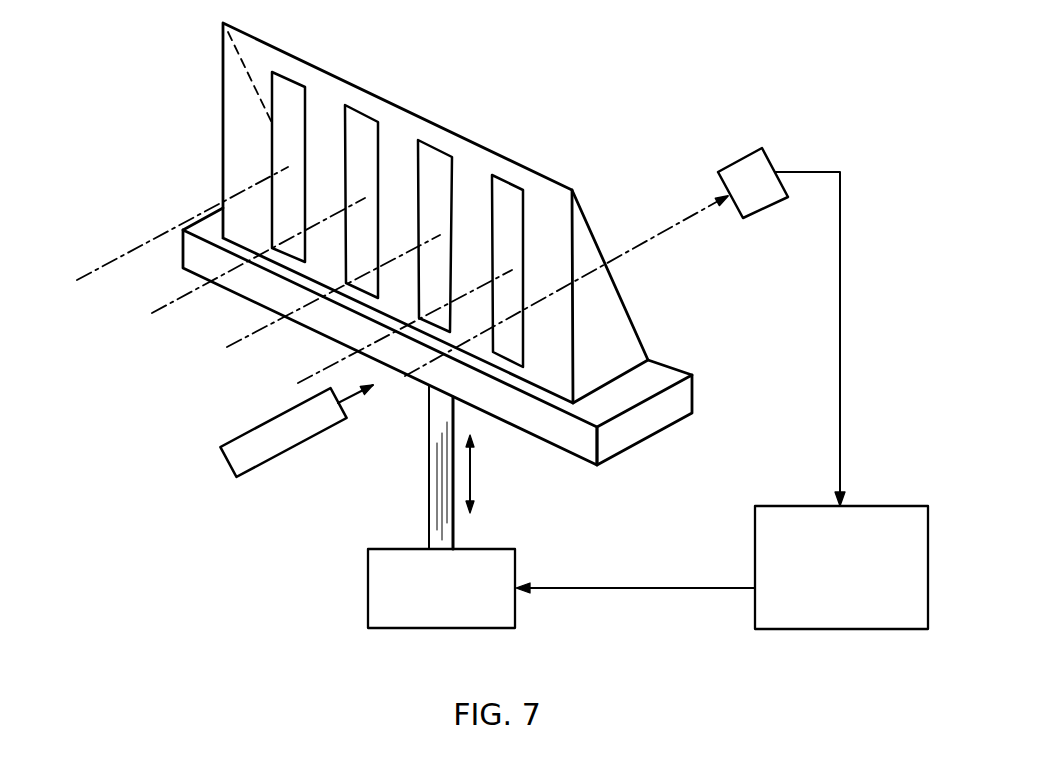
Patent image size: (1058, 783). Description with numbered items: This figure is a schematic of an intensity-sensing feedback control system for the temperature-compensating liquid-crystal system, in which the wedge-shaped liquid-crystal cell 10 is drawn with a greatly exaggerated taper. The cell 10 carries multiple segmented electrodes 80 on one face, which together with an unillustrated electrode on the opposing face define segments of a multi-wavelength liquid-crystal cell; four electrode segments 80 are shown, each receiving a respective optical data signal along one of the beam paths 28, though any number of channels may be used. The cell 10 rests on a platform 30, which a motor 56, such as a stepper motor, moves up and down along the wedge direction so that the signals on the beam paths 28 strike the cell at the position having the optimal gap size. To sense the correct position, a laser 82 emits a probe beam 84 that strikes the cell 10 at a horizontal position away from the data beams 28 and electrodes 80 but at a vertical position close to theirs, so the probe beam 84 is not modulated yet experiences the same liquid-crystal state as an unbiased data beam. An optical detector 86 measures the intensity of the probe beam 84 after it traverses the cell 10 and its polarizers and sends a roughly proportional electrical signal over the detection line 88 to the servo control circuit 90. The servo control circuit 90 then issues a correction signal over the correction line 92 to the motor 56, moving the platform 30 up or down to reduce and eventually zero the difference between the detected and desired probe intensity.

The wedge-shaped liquid-crystal cell 10 is at (610, 311).
The beam paths 28 is at (99, 270).
The platform 30 is at (683, 400).
The motor 56 is at (508, 562).
The segmented electrodes 80 is at (287, 83).
The laser 82 is at (268, 466).
The probe beam 84 is at (392, 375).
The optical detector 86 is at (762, 203).
The detection line 88 is at (843, 337).
The servo control circuit 90 is at (870, 505).
The correction line 92 is at (660, 573).